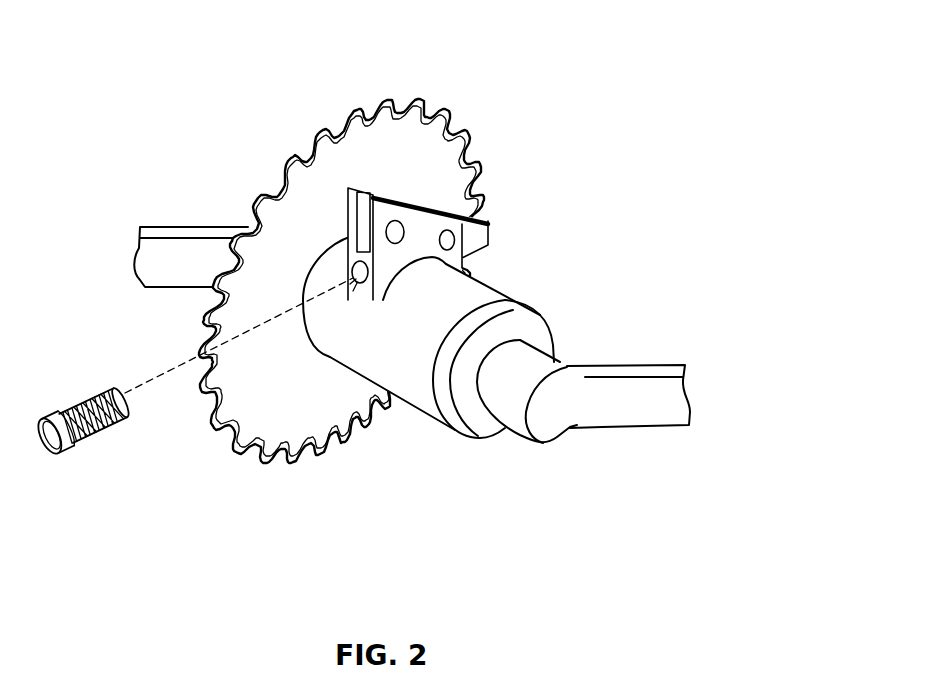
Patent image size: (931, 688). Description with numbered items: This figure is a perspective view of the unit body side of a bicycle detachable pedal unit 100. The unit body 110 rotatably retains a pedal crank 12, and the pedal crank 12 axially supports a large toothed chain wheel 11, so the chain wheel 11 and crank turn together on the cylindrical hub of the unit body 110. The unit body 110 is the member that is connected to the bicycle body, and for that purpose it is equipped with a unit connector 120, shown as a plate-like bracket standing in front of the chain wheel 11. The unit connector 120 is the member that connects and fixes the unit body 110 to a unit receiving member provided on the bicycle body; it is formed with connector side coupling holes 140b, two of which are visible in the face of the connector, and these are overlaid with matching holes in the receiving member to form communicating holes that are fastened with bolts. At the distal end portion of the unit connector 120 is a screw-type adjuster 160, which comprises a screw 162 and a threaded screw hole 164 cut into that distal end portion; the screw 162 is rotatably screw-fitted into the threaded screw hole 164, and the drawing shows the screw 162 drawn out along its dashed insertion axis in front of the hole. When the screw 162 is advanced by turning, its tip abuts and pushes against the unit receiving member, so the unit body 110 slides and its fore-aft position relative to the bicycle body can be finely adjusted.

The sprocket assembly 100 is at (317, 304).
The chain wheel 11 is at (303, 180).
The pedal crank 12 is at (568, 392).
The unit body 110 is at (449, 288).
The unit connector 120 is at (449, 288).
The connector side coupling holes 140b is at (398, 226).
The screw-type adjuster 160 is at (243, 340).
The screw 162 is at (88, 397).
The threaded screw hole 164 is at (352, 284).